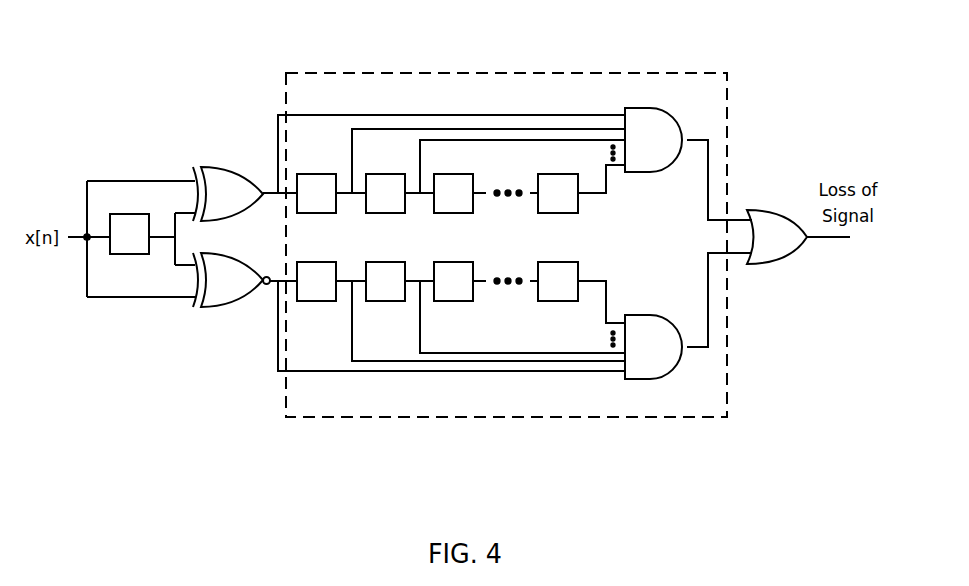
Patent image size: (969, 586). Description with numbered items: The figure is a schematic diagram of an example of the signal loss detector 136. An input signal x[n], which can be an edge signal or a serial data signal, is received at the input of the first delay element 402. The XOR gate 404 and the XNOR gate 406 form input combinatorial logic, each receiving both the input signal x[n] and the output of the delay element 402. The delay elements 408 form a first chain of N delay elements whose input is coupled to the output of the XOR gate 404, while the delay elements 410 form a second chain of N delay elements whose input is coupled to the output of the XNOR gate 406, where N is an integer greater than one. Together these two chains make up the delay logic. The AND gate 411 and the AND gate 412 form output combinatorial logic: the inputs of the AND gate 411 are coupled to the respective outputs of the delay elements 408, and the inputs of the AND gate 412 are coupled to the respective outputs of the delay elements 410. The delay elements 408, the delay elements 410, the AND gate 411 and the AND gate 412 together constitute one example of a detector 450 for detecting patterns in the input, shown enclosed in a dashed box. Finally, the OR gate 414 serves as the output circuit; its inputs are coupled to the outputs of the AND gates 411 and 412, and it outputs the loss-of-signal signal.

The signal loss detector 136 is at (231, 104).
The delay element 402 is at (134, 254).
The exclusive OR (XOR) gate 404 is at (228, 194).
The exclusive NOR (XNOR) gate 406 is at (231, 280).
The delay elements 408 is at (306, 174).
The delay elements 410 is at (315, 262).
The AND gate 411 is at (646, 140).
The AND gate 412 is at (646, 347).
The OR gate 414 is at (777, 237).
The detector 450 is at (632, 72).